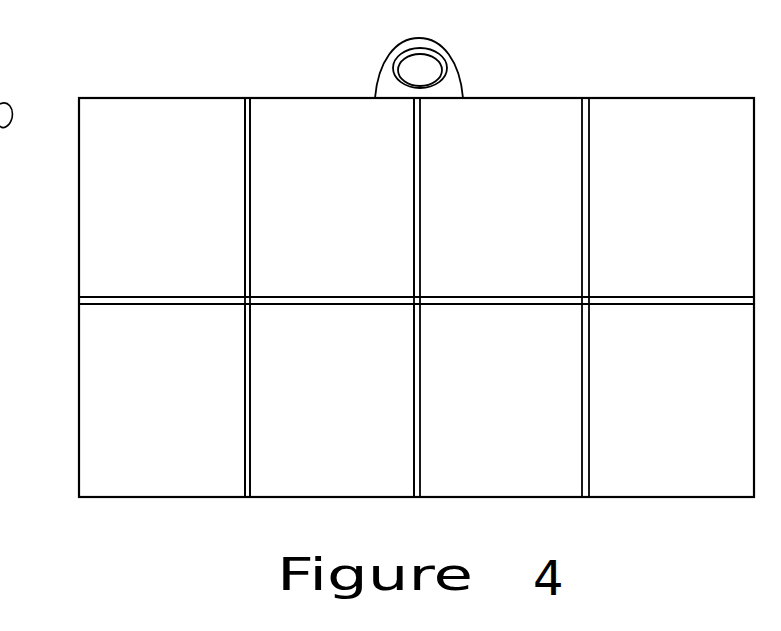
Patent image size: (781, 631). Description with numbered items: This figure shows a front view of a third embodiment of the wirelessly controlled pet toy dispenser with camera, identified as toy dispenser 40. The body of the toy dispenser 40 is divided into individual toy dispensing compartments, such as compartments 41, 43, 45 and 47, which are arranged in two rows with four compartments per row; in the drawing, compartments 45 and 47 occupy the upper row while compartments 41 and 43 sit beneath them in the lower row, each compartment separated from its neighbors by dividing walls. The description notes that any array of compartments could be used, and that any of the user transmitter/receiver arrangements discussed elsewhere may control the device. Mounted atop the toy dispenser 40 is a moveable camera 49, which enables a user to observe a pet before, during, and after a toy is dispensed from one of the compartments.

The toy dispenser 40 is at (60, 461).
The compartment 41 is at (168, 478).
The compartment 43 is at (285, 471).
The compartment 45 is at (147, 117).
The compartment 47 is at (317, 117).
The moveable camera 49 is at (420, 72).